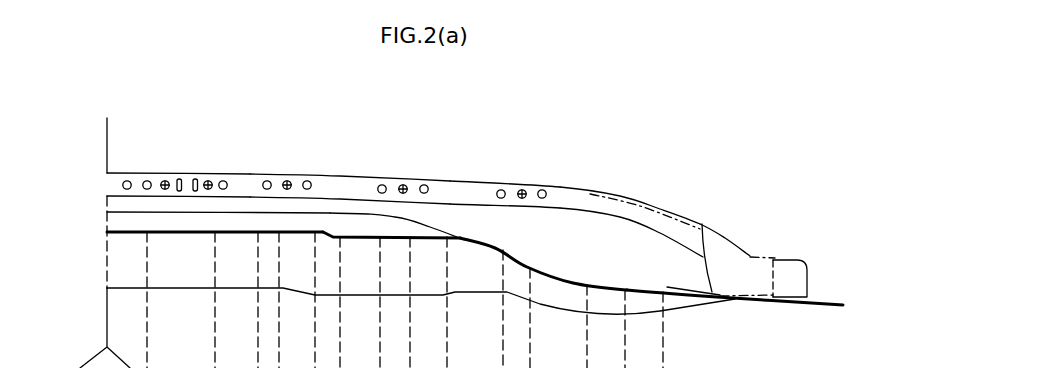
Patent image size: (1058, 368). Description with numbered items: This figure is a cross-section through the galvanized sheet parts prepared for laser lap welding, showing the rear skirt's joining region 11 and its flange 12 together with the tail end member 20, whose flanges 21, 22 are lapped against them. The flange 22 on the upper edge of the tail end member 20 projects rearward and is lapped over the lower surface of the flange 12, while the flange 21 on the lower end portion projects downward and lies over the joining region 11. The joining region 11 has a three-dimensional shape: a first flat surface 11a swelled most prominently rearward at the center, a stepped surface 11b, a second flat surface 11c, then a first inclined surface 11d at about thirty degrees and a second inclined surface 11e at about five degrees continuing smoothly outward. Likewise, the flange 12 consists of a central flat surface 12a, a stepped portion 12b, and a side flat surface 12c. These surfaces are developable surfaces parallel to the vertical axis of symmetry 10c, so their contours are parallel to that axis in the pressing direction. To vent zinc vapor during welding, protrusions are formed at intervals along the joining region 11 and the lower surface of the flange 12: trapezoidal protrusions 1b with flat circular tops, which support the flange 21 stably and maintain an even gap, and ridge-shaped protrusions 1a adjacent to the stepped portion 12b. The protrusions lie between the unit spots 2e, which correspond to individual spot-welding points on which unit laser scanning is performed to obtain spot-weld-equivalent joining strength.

The axis of symmetry 10c is at (105, 226).
The flat surface 12a is at (139, 178).
The stepped portion 12b is at (185, 197).
The flat surface 12c is at (472, 192).
The flange 12 is at (587, 187).
The ridge-shaped protrusion 1a is at (195, 182).
The trapezoidal protrusion 1b is at (425, 185).
The unit spot 2e is at (523, 190).
The first flat surface 11a is at (252, 230).
The stepped surface 11b is at (335, 237).
The second flat surface 11c is at (427, 236).
The first inclined surface 11d is at (495, 243).
The second inclined surface 11e is at (612, 287).
The joining region 11 is at (700, 300).
The flange 22 is at (709, 213).
The tail end member 20 is at (730, 235).
The flange 21 is at (775, 262).